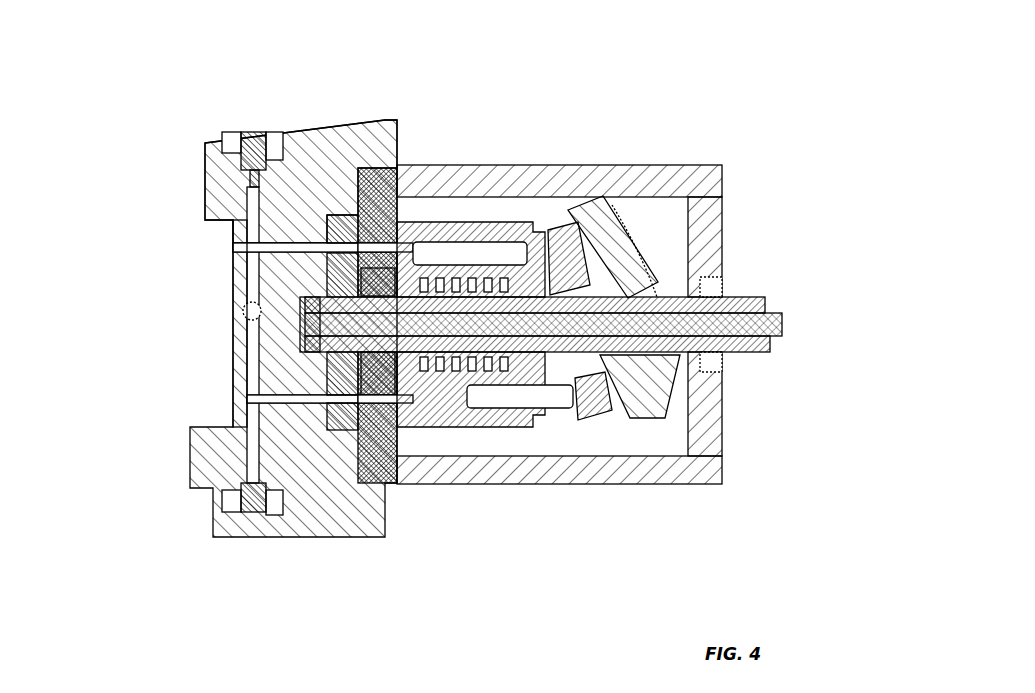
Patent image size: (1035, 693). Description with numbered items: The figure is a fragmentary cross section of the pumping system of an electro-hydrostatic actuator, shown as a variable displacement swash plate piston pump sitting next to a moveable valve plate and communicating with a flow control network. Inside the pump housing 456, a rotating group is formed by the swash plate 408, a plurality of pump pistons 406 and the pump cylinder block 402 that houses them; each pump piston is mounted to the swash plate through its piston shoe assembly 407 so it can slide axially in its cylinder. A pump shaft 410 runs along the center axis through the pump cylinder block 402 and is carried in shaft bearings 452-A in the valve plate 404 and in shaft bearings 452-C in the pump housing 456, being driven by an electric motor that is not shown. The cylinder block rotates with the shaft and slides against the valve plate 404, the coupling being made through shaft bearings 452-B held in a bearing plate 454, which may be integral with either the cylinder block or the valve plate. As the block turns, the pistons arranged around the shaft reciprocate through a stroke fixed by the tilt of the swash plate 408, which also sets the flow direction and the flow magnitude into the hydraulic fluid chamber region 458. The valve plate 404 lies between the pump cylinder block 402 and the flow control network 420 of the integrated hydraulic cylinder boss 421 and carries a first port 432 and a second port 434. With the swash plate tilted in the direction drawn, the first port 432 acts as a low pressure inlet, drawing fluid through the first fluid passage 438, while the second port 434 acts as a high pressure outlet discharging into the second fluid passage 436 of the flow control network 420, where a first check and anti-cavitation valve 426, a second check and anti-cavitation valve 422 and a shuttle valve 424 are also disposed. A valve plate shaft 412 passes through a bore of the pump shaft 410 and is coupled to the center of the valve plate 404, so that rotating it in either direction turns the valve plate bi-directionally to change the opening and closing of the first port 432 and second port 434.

The pump cylinder block 402 is at (552, 228).
The valve plate 404 is at (338, 427).
The pump pistons 406 is at (556, 420).
The piston shoe assemblies 407 is at (613, 417).
The swash plate 408 is at (617, 223).
The pump shaft 410 is at (747, 355).
The valve plate shaft 412 is at (786, 330).
The flow control network 420 is at (384, 538).
The integrated hydraulic cylinder boss 421 is at (333, 173).
The second check and anti-cavitation valve 422 is at (240, 527).
The shuttle valve 424 is at (233, 307).
The first check and anti-cavitation valve 426 is at (223, 153).
The first port 432 is at (403, 417).
The second port 434 is at (400, 250).
The second fluid passage 436 is at (313, 240).
The first fluid passage 438 is at (280, 407).
The shaft bearings 452-A is at (310, 343).
The shaft bearings 452-B is at (367, 273).
The shaft bearings 452-C is at (707, 292).
The bearing plate 454 is at (377, 177).
The pump housing 456 is at (732, 462).
The hydraulic fluid chamber region 458 is at (227, 355).